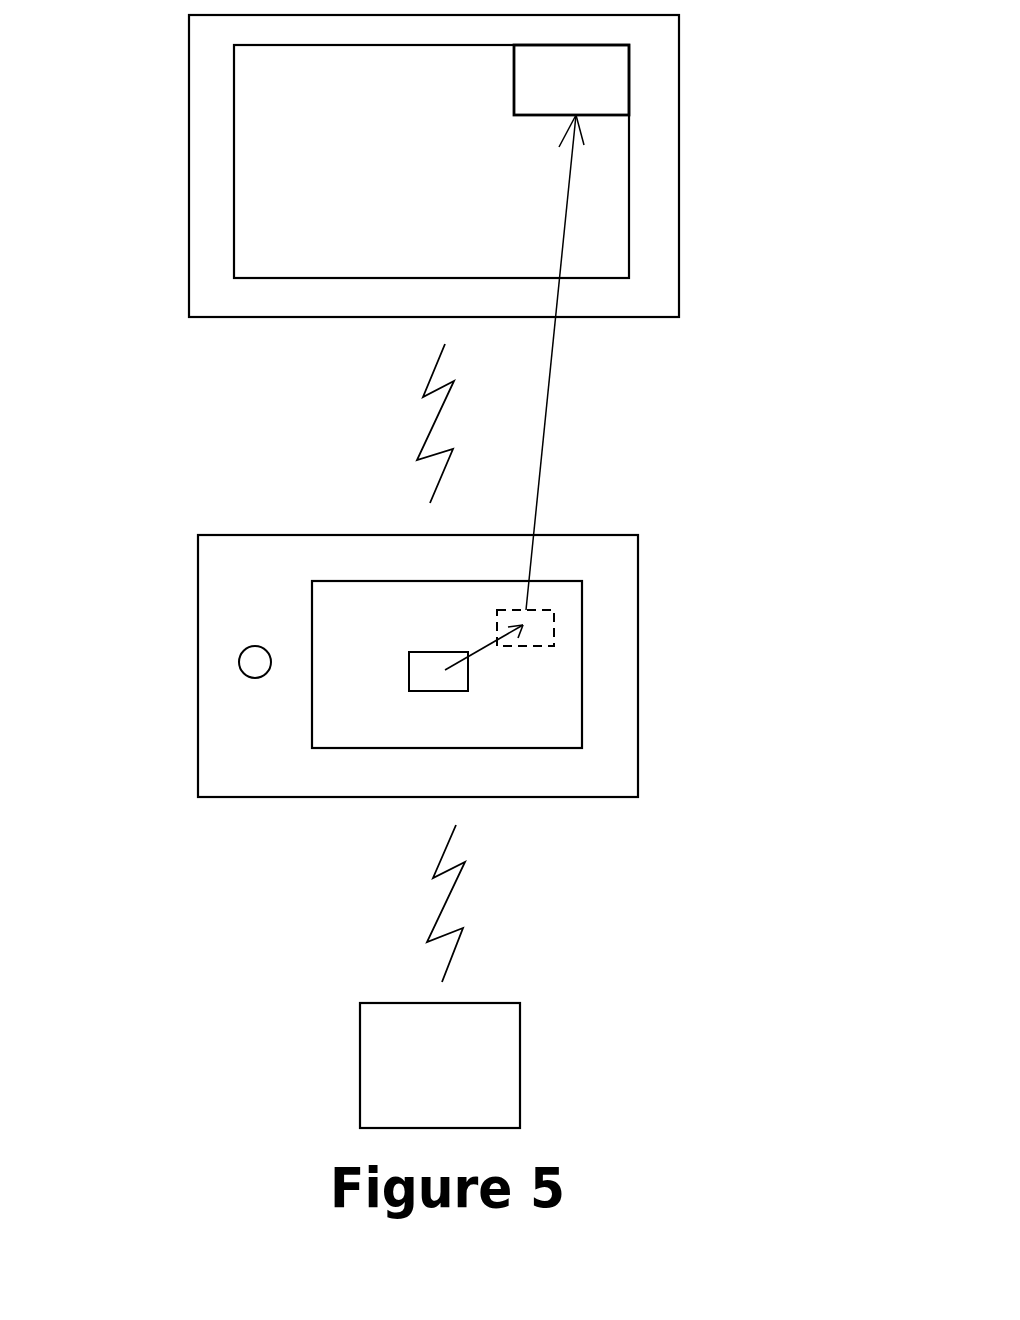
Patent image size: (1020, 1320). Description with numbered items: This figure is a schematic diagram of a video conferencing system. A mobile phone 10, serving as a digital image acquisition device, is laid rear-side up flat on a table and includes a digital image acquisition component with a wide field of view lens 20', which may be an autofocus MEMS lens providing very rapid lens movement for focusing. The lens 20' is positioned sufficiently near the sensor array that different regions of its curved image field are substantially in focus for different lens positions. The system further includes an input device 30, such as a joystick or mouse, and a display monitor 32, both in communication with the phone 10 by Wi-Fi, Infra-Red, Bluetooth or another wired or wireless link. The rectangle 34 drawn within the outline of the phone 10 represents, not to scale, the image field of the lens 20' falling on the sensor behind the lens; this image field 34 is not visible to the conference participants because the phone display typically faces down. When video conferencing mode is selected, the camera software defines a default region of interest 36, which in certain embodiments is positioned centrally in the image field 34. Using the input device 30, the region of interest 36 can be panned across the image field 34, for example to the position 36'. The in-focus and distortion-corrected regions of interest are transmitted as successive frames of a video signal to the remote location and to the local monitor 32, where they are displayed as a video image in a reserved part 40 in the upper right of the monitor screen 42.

The mobile phone 10 is at (638, 590).
The WFOV lens 20' is at (198, 645).
The input device 30 is at (520, 1068).
The display monitor 32 is at (679, 172).
The image field 34 is at (582, 672).
The default region of interest 36 is at (451, 682).
The panned ROI position 36' is at (528, 671).
The reserved part 40 is at (605, 87).
The monitor screen 42 is at (282, 137).